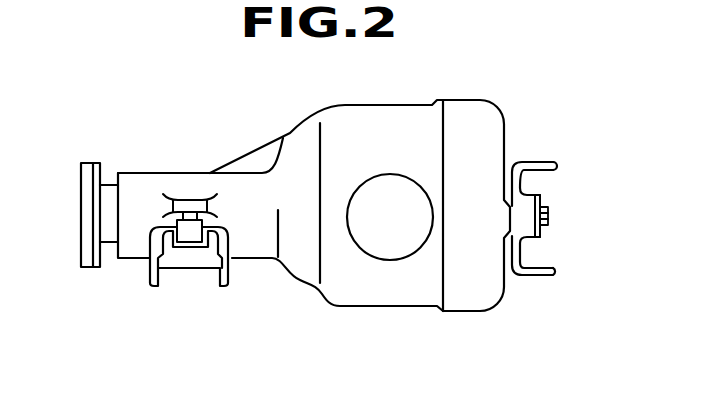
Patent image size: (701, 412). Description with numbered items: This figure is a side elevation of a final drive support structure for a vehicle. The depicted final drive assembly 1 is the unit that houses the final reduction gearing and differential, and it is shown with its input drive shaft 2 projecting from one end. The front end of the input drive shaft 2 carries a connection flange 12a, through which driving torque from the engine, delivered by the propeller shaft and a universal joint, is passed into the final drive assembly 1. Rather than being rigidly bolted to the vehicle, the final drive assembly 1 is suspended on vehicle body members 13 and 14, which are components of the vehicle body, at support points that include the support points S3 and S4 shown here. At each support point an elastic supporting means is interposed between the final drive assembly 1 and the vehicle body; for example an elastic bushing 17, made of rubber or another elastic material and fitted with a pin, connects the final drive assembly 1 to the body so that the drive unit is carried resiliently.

The final drive assembly 1 is at (378, 310).
The input drive shaft 2 is at (110, 233).
The connection flange 12a is at (95, 166).
The vehicle body member 13 is at (223, 278).
The vehicle body member 14 is at (534, 160).
The elastic bushing 17 is at (533, 233).
The third support point S3 is at (558, 212).
The fourth support point S4 is at (191, 197).